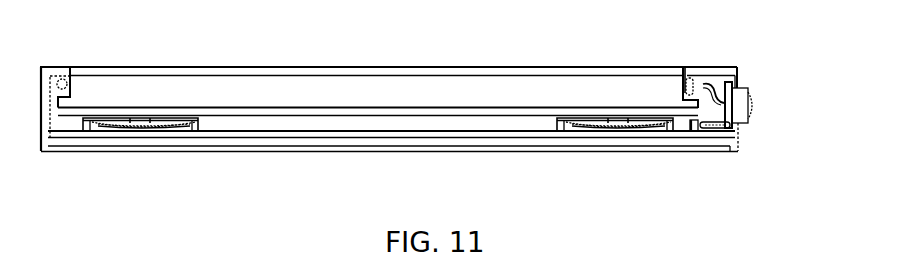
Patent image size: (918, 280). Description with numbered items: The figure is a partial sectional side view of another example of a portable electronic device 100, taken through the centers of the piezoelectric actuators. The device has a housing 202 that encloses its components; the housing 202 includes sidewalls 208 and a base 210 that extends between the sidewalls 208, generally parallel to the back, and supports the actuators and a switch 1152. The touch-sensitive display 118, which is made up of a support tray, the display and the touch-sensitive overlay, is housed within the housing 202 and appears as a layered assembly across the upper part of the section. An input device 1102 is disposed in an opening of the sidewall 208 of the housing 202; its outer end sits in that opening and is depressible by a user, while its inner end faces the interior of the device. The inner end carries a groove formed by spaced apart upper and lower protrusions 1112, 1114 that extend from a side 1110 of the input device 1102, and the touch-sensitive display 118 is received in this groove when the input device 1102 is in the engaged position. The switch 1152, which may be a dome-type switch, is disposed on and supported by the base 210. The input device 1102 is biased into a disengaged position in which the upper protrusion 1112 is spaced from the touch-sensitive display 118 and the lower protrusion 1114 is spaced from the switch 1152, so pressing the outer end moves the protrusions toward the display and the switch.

The portable electronic device 100 is at (89, 46).
The touch-sensitive display 118 is at (326, 66).
The housing 202 is at (173, 147).
The sidewall 208 is at (733, 66).
The base 210 is at (513, 133).
The input device 1102 is at (748, 93).
The side 1110 is at (722, 105).
The upper protrusion 1112 is at (707, 80).
The lower protrusion 1114 is at (708, 133).
The switch 1152 is at (692, 132).